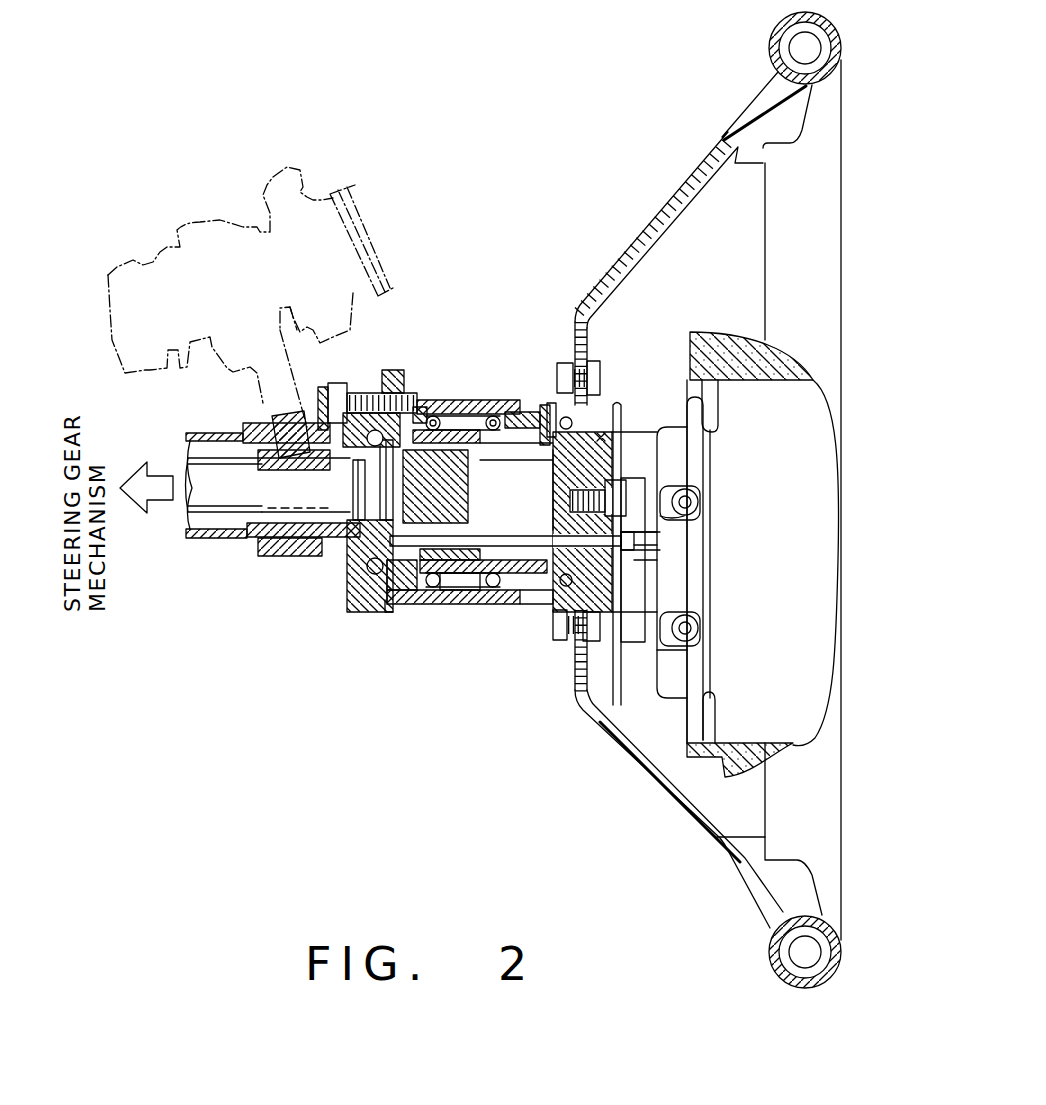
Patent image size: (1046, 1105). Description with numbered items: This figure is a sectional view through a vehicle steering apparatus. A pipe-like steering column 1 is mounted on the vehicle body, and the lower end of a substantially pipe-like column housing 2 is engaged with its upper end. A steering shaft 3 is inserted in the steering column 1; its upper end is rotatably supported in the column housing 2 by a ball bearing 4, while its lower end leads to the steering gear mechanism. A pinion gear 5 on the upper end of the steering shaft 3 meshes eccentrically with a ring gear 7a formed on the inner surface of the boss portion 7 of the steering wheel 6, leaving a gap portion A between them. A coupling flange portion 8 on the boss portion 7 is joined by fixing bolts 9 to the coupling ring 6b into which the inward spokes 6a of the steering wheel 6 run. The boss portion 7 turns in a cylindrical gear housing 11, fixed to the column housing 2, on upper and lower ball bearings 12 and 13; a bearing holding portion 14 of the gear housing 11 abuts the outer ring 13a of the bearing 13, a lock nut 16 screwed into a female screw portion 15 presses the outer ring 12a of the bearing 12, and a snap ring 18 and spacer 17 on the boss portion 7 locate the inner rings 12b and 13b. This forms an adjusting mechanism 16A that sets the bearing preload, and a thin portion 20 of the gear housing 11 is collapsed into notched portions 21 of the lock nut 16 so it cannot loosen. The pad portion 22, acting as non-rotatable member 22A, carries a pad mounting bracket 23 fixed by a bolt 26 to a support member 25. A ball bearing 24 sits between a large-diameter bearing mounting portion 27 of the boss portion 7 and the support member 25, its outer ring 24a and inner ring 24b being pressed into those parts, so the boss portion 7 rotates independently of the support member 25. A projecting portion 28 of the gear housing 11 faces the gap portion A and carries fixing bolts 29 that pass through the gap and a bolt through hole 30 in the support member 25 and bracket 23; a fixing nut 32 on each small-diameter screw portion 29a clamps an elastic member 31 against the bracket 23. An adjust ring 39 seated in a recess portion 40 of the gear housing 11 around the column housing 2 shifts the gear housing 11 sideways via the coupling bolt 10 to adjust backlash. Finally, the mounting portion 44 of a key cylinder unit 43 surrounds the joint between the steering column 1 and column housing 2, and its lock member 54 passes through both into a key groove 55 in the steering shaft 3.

The steering column 1 is at (212, 532).
The column housing 2 is at (350, 540).
The steering shaft 3 is at (205, 445).
The ball bearing 4 is at (350, 410).
The pinion gear 5 is at (393, 484).
The steering wheel 6 is at (770, 945).
The spokes 6a is at (658, 212).
The coupling ring 6b is at (576, 650).
The boss portion 7 is at (555, 612).
The ring gear 7a is at (480, 501).
The coupling flange portion 8 is at (563, 363).
The fixing bolts 9 is at (597, 361).
The coupling bolt 10 is at (322, 400).
The gear housing 11 is at (395, 368).
The ball bearing 12 is at (530, 405).
The outer ring 12a is at (525, 412).
The inner ring 12b is at (435, 486).
The ball bearing 13 is at (468, 400).
The outer ring 13a is at (440, 400).
The inner ring 13b is at (485, 405).
The bearing holding portion 14 is at (430, 400).
The female screw portion 15 is at (495, 595).
The lock nut 16 is at (510, 598).
The adjusting mechanism 16A is at (512, 604).
The spacer 17 is at (448, 598).
The snap ring 18 is at (462, 604).
The thin portion 20 is at (516, 458).
The notched portions 21 is at (535, 490).
The pad portion 22 is at (793, 375).
The non-rotatable member 22A is at (838, 425).
The pad mounting bracket 23 is at (637, 642).
The ball bearing 24 is at (600, 418).
The outer ring 24a is at (660, 650).
The inner ring 24b is at (700, 625).
The support member 25 is at (603, 437).
The bolt 26 is at (618, 482).
The bearing mounting portion 27 is at (550, 403).
The projecting portion 28 is at (410, 604).
The fixing bolts 29 is at (530, 536).
The small-diameter screw portion 29a is at (634, 540).
The bolt through hole 30 is at (640, 562).
The elastic member 31 is at (660, 516).
The fixing nut 32 is at (640, 545).
The adjust ring 39 is at (385, 600).
The recess portion 40 is at (362, 395).
The key cylinder unit 43 is at (283, 415).
The mounting portion 44 is at (287, 556).
The lock member 54 is at (286, 465).
The key groove 55 is at (258, 490).
The gap portion A is at (493, 524).